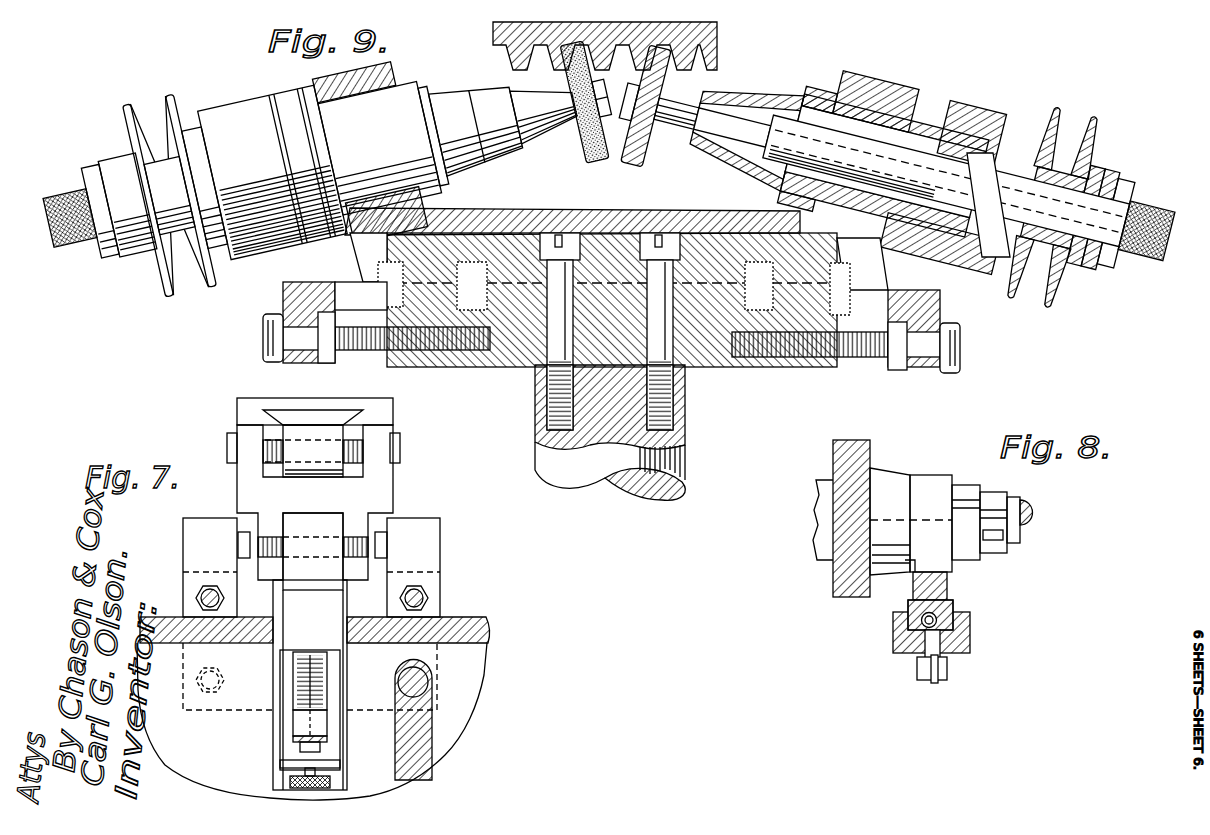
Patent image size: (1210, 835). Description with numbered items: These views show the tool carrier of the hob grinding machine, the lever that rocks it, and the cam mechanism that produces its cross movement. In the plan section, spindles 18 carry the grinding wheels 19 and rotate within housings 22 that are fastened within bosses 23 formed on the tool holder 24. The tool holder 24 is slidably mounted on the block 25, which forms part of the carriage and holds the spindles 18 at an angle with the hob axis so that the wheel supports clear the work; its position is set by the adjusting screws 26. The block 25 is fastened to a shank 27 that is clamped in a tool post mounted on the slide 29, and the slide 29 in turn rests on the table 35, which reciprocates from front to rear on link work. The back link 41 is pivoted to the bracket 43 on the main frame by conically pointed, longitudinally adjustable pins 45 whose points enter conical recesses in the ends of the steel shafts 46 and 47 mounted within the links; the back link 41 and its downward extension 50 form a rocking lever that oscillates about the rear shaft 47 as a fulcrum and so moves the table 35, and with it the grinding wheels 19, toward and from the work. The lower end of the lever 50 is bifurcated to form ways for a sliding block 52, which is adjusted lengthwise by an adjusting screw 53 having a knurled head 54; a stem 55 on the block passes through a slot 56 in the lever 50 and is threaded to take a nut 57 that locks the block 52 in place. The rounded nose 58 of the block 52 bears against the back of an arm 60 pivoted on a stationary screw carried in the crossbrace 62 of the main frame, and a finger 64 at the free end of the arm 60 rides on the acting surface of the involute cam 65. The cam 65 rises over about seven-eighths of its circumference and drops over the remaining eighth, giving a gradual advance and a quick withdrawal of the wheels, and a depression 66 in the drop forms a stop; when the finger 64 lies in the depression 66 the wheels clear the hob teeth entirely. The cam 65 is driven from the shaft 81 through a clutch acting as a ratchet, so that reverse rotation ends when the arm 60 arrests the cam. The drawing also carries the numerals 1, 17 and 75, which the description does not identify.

In FIG. 7, the base 1 is at (472, 668).
In FIG. 9, the pulley 17 is at (148, 114).
In FIG. 9, the spindles 18 is at (550, 118).
In FIG. 9, the grinding wheels 19 is at (582, 148).
In FIG. 9, the housings 22 is at (383, 122).
In FIG. 9, the bosses 23 is at (378, 127).
In FIG. 9, the tool holder 24 is at (702, 214).
In FIG. 9, the block 25 is at (720, 360).
In FIG. 9, the adjusting screws 26 is at (367, 351).
In FIG. 9, the shank 27 is at (685, 459).
In FIG. 7, the slide 29 is at (392, 408).
In FIG. 7, the table 35 is at (303, 420).
In FIG. 7, the back link 41 is at (240, 488).
In FIG. 7, the bracket 43 is at (440, 557).
In FIG. 7, the pins 45 is at (227, 447).
In FIG. 7, the steel shaft 46 is at (308, 450).
In FIG. 7, the rear shaft 47 is at (312, 548).
In FIG. 7, the downward extension 50 is at (330, 601).
In FIG. 8, the downward extension 50 is at (893, 646).
In FIG. 7, the sliding block 52 is at (296, 718).
In FIG. 8, the sliding block 52 is at (907, 622).
In FIG. 7, the adjusting screw 53 is at (312, 658).
In FIG. 8, the adjusting screw 53 is at (975, 609).
In FIG. 7, the knurled head 54 is at (331, 779).
In FIG. 7, the stem 55 is at (324, 735).
In FIG. 8, the stem 55 is at (970, 641).
In FIG. 8, the slot 56 is at (936, 682).
In FIG. 8, the nut 57 is at (917, 668).
In FIG. 8, the rounded nose 58 is at (953, 606).
In FIG. 8, the arm 60 is at (949, 577).
In FIG. 7, the crossbrace 62 is at (405, 748).
In FIG. 8, the crossbrace 62 is at (847, 442).
In FIG. 8, the finger 64 is at (925, 567).
In FIG. 8, the cam 65 is at (925, 488).
In FIG. 8, the depression 66 is at (935, 549).
In FIG. 8, the ball end 75 is at (1047, 503).
In FIG. 8, the shaft 81 is at (1014, 534).